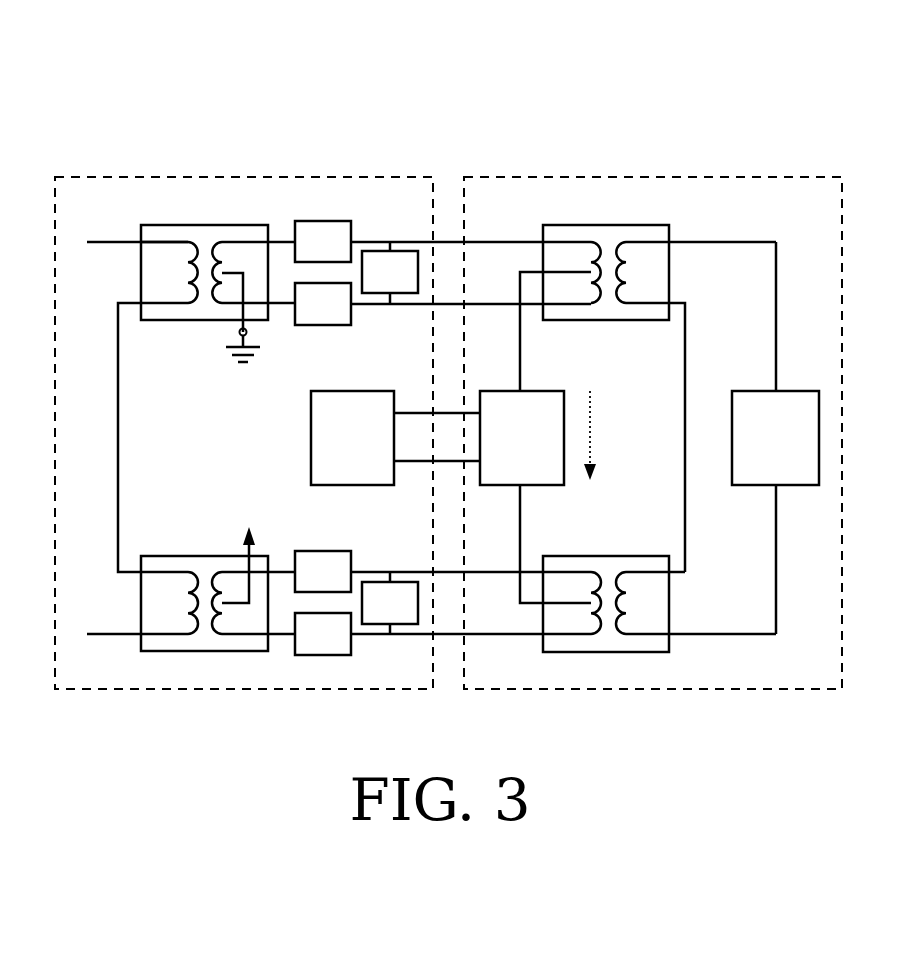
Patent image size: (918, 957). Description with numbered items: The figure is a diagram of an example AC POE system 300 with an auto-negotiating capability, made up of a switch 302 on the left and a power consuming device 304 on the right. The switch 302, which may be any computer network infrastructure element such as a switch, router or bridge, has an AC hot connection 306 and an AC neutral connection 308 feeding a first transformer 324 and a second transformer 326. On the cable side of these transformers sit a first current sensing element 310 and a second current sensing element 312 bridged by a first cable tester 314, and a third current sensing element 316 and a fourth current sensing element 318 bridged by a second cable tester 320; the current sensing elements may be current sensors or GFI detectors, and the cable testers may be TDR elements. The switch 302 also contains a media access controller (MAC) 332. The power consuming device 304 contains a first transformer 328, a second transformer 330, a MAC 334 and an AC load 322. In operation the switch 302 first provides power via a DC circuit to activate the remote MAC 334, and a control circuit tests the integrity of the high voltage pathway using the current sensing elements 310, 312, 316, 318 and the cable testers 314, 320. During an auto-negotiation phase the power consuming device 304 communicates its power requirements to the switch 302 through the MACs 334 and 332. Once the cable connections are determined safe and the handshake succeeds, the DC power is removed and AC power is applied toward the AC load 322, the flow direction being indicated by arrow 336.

The AC POE system 300 is at (101, 53).
The switch 302 is at (323, 401).
The power consuming device 304 is at (653, 401).
The AC hot connection 306 is at (127, 259).
The AC neutral connection 308 is at (128, 618).
The first current sensing element 310 is at (443, 241).
The second current sensing element 312 is at (443, 304).
The first cable tester 314 is at (390, 273).
The third current sensing element 316 is at (443, 571).
The fourth current sensing element 318 is at (443, 634).
The second cable tester 320 is at (390, 603).
The AC load 322 is at (775, 438).
The first transformer 324 is at (206, 398).
The second transformer 326 is at (218, 567).
The first transformer 328 is at (659, 398).
The second transformer 330 is at (659, 567).
The media access controller (MAC) 332 is at (395, 438).
The MAC 334 is at (535, 437).
The power flow direction 336 is at (610, 435).